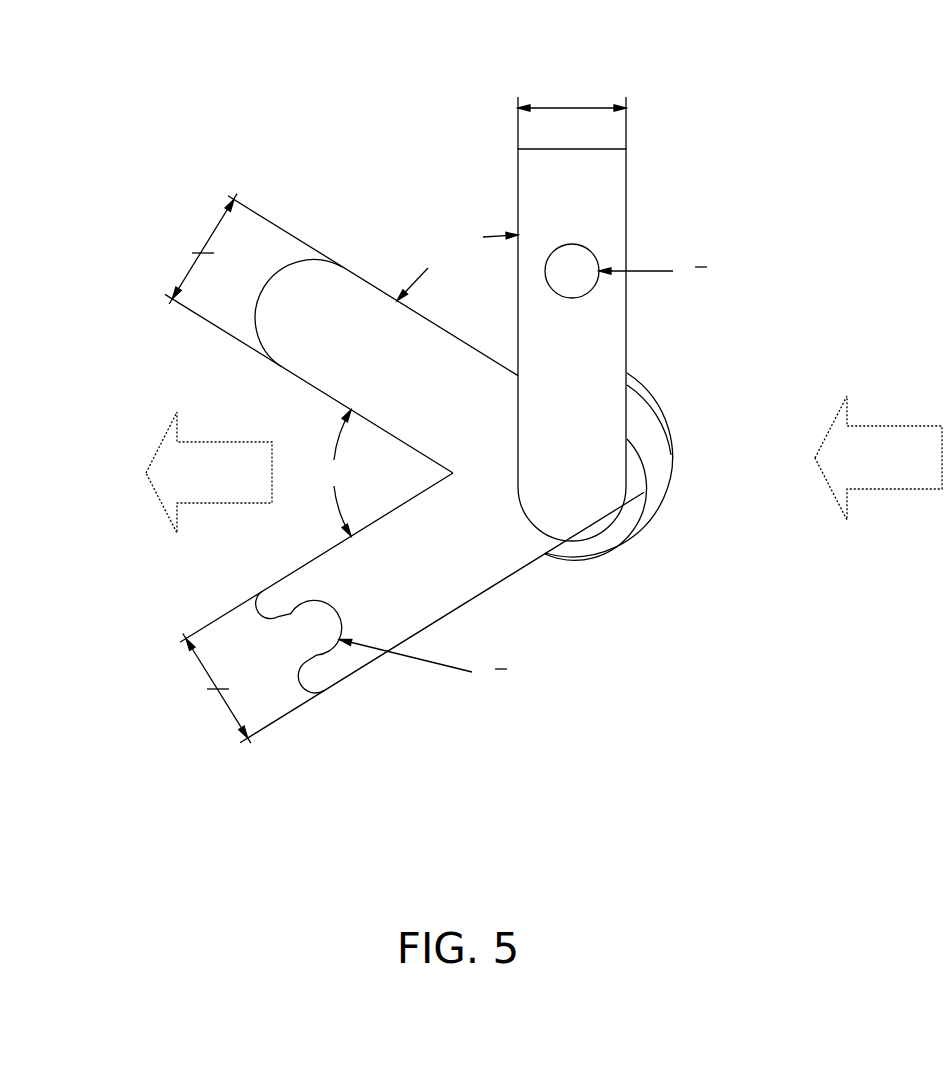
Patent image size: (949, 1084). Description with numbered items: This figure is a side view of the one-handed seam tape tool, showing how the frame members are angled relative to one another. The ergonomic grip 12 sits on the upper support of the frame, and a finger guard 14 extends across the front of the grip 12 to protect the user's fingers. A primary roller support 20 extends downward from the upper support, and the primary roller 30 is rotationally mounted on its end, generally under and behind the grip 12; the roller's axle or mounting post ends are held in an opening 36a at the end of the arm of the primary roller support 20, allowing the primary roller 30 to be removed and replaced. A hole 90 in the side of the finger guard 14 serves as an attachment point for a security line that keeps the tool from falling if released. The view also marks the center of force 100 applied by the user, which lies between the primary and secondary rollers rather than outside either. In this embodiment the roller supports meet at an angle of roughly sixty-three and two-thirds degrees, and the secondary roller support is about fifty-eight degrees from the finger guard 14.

The ergonomic grip 12 is at (660, 457).
The finger guard 14 is at (583, 200).
The primary roller support 20 is at (375, 620).
The primary roller 30 is at (323, 333).
The opening 36a is at (312, 632).
The hole 90 is at (585, 268).
The center of force 100 is at (544, 464).